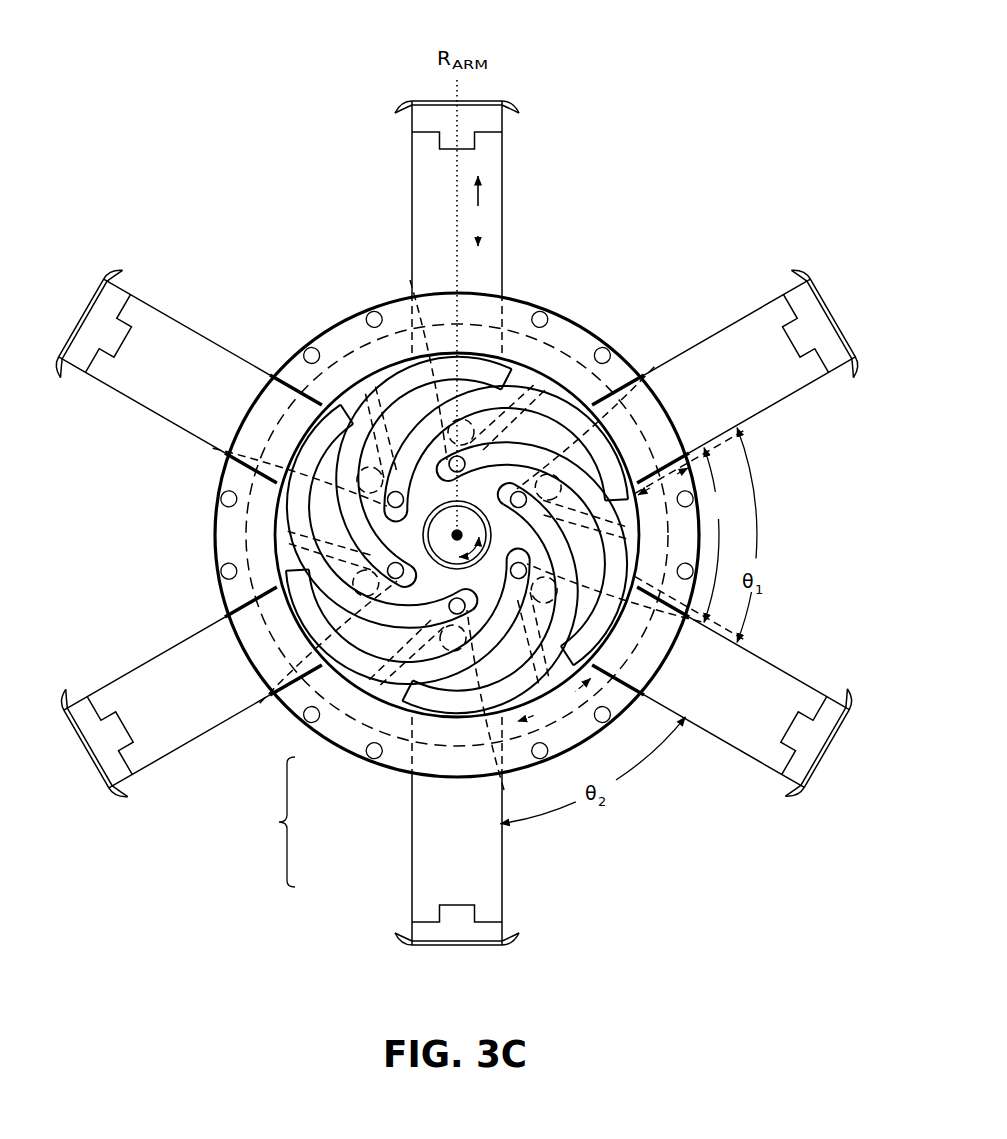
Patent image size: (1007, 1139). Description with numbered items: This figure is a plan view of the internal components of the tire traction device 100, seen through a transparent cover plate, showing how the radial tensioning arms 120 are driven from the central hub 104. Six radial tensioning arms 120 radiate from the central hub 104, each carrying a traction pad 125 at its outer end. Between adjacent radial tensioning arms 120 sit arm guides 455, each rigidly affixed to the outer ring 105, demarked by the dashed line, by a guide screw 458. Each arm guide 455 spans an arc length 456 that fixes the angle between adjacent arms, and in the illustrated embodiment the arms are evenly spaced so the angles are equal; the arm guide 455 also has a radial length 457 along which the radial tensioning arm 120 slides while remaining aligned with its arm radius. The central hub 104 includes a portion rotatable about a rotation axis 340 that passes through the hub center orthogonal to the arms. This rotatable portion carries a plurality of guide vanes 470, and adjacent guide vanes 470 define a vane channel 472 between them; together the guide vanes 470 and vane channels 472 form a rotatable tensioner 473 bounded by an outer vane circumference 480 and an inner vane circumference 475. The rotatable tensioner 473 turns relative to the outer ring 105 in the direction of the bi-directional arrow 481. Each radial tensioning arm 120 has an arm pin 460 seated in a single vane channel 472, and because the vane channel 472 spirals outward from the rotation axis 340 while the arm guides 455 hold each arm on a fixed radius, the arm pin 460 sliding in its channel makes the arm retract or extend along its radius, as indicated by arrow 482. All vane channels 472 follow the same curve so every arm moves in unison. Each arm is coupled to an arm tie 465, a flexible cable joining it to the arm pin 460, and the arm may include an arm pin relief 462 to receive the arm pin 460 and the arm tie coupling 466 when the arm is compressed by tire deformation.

The tire traction device 100 is at (257, 139).
The central hub 104 is at (379, 289).
The outer ring 105 is at (245, 520).
The radial tensioning arm 120 is at (761, 372).
The traction pad 125 is at (428, 112).
The rotation axis 340 is at (452, 537).
The arm guide 455 is at (684, 543).
The arc length 456 is at (719, 535).
The radial length 457 is at (663, 481).
The guide screw 458 is at (687, 579).
The arm pin 460 is at (462, 458).
The arm pin relief 462 is at (460, 348).
The arm tie 465 is at (440, 449).
The arm tie coupling 466 is at (485, 405).
The guide vane 470 is at (367, 655).
The vane channel 472 is at (388, 680).
The rotatable tensioner 473 is at (267, 822).
The inner vane circumference 475 is at (424, 537).
The outer vane circumference 480 is at (325, 653).
The bi-directional arrow 481 is at (554, 699).
The arrow 482 is at (480, 211).